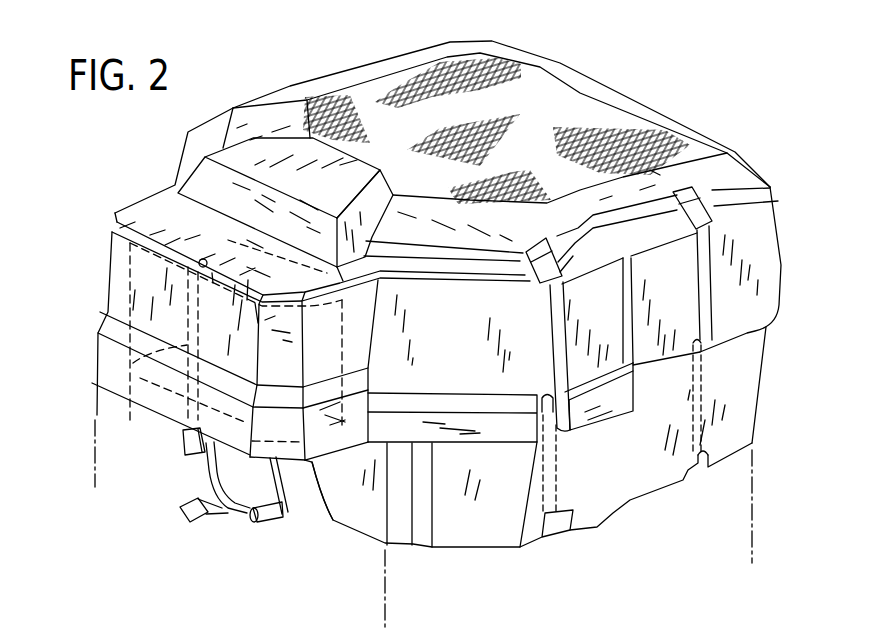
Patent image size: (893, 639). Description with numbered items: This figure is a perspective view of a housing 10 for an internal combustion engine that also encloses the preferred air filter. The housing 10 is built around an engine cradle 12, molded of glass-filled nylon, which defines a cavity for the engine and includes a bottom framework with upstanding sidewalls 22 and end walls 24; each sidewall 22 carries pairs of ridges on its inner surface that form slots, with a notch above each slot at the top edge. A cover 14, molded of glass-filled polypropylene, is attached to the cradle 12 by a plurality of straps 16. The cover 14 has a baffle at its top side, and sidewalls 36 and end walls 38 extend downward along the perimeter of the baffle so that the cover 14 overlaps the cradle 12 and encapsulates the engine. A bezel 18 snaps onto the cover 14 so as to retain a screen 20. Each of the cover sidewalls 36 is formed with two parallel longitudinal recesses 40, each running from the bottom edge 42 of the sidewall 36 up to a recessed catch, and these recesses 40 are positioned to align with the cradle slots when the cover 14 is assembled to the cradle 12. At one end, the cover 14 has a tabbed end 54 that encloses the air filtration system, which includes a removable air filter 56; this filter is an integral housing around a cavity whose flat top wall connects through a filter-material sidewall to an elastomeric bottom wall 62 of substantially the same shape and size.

The housing 10 is at (600, 50).
The engine cradle 12 is at (462, 537).
The cover 14 is at (761, 278).
The straps 16 is at (719, 210).
The bezel 18 is at (268, 110).
The screen 20 is at (558, 114).
The sidewalls 22 is at (640, 452).
The end walls 24 is at (355, 482).
The sidewalls 36 is at (690, 285).
The end walls 38 is at (180, 333).
The longitudinal recesses 40 is at (712, 334).
The bottom edge 42 is at (747, 335).
The tabbed end 54 is at (124, 214).
The air filter 56 is at (133, 363).
The bottom wall 62 is at (183, 433).